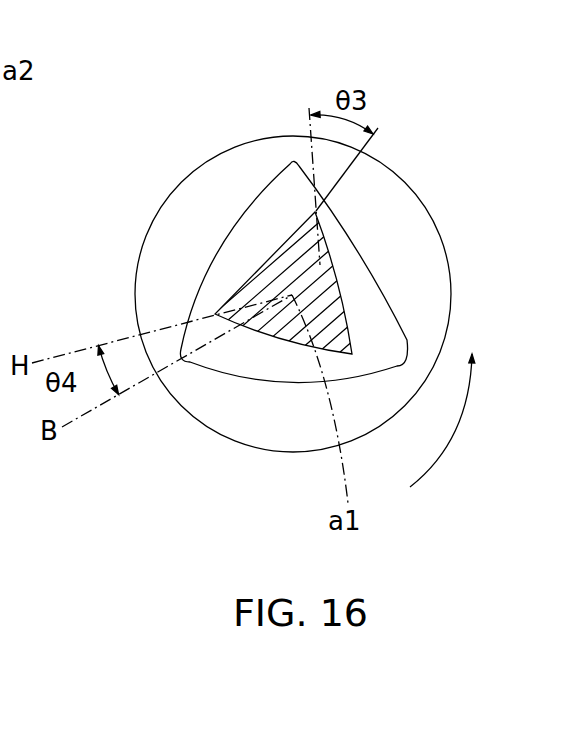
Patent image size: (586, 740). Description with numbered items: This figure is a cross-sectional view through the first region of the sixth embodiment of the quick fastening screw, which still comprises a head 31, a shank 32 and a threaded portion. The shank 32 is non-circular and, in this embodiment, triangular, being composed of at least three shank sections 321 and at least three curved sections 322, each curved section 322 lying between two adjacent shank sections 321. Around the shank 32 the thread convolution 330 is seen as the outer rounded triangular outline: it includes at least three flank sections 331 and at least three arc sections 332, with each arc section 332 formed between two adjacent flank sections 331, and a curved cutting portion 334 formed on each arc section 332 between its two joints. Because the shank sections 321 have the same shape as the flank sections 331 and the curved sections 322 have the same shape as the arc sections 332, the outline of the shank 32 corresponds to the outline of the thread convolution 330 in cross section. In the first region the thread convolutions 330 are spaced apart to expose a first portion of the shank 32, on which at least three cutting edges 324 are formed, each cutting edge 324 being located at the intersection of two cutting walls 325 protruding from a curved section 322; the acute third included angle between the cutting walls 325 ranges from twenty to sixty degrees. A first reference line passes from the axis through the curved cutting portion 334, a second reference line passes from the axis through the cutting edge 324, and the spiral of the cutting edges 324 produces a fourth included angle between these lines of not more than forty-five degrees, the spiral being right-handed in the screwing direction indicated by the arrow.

The head 31 is at (413, 190).
The shank 32 is at (352, 312).
The shank section 321 is at (292, 295).
The curved section 322 is at (316, 211).
The cutting edge 324 is at (315, 209).
The cutting wall 325 is at (315, 214).
The thread convolution 330 is at (203, 280).
The flank section 331 is at (378, 272).
The arc section 332 is at (290, 160).
The curved cutting portion 334 is at (294, 161).